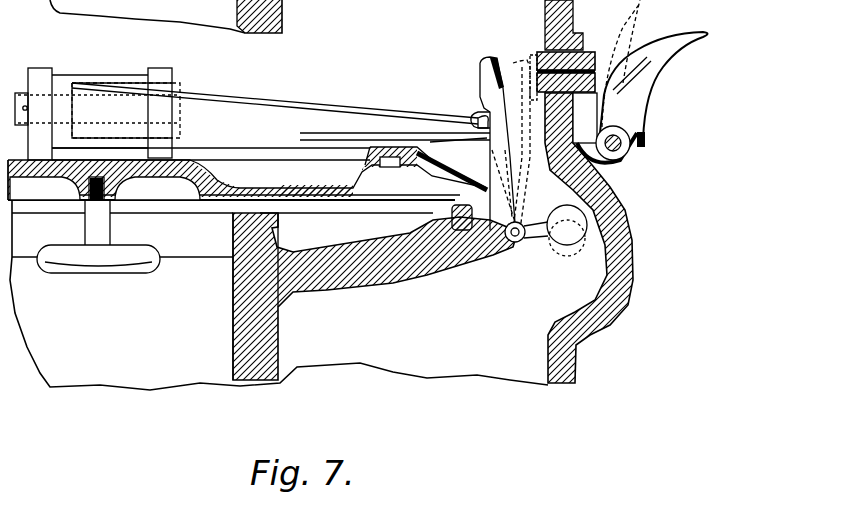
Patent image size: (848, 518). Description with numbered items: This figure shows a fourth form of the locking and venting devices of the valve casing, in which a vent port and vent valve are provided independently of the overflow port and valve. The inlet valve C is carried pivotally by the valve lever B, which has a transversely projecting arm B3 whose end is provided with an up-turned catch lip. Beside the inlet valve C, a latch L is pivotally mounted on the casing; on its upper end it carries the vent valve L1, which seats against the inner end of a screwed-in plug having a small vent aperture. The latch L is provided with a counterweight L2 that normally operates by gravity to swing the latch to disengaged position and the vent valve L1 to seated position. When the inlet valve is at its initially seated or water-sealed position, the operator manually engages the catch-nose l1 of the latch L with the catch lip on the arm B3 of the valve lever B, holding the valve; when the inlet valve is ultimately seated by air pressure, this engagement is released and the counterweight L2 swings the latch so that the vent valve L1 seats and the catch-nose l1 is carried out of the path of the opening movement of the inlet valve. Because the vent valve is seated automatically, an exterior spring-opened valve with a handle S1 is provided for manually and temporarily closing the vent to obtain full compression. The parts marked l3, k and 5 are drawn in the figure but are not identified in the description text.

The valve lever B is at (97, 83).
The transversely projecting arm B3 is at (300, 110).
The inlet valve C is at (193, 170).
The latch L is at (488, 155).
The catch-nose l1 is at (474, 111).
The lever arm l3 is at (487, 137).
The vent valve L1 is at (503, 40).
The counterweight L2 is at (562, 238).
The collar k is at (583, 52).
The pin 5 is at (640, 63).
The handle S1 is at (682, 43).